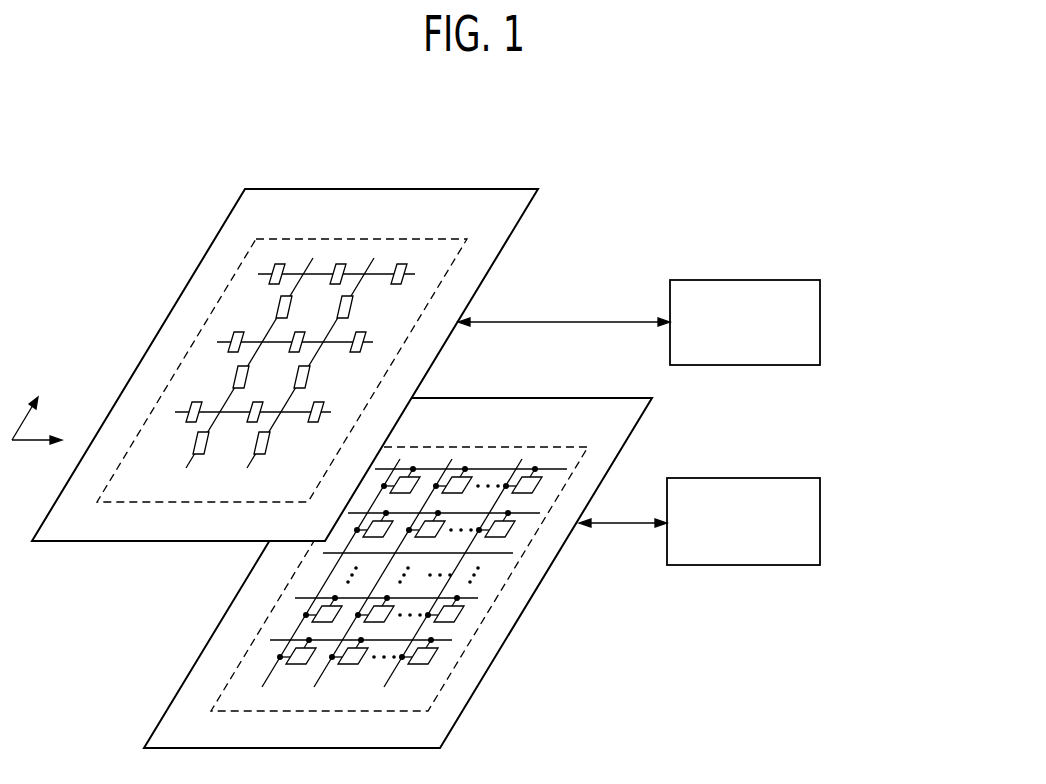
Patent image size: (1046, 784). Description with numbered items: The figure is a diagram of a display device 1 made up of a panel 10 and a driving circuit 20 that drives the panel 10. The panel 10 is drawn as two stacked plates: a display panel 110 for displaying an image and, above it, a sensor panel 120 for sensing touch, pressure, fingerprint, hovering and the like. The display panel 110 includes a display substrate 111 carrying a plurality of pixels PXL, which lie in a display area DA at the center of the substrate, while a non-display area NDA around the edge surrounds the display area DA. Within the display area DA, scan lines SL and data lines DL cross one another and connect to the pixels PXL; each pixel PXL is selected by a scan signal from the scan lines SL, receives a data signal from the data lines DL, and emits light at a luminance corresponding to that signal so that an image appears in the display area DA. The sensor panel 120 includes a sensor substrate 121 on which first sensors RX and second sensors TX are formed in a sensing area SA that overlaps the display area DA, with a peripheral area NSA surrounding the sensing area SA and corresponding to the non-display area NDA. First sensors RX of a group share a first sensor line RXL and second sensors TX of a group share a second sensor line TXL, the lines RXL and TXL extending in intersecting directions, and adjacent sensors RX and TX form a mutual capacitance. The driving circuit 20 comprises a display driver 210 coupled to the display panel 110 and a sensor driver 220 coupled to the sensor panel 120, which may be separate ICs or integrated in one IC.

The display device 1 is at (666, 113).
The panel 10 is at (98, 563).
The driving circuit 20 is at (883, 335).
The display panel 110 is at (196, 643).
The display substrate 111 is at (462, 715).
The sensor panel 120 is at (187, 547).
The sensor substrate 121 is at (152, 342).
The display driver 210 is at (820, 515).
The sensor driver 220 is at (820, 320).
The sensing area SA is at (461, 228).
The peripheral area NSA is at (455, 292).
The display area DA is at (560, 438).
The non-display area NDA is at (593, 470).
The second sensor TX is at (272, 268).
The first sensor RX is at (277, 313).
The second sensor line TXL is at (297, 274).
The first sensor line RXL is at (274, 322).
The pixel PXL is at (511, 529).
The scan line SL is at (472, 598).
The data line DL is at (419, 630).